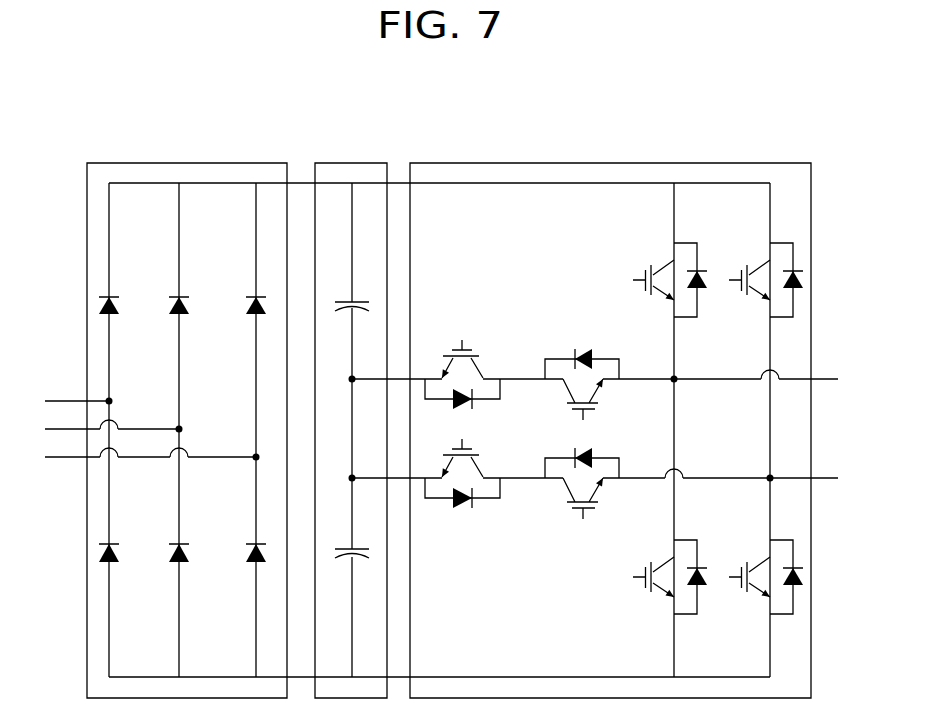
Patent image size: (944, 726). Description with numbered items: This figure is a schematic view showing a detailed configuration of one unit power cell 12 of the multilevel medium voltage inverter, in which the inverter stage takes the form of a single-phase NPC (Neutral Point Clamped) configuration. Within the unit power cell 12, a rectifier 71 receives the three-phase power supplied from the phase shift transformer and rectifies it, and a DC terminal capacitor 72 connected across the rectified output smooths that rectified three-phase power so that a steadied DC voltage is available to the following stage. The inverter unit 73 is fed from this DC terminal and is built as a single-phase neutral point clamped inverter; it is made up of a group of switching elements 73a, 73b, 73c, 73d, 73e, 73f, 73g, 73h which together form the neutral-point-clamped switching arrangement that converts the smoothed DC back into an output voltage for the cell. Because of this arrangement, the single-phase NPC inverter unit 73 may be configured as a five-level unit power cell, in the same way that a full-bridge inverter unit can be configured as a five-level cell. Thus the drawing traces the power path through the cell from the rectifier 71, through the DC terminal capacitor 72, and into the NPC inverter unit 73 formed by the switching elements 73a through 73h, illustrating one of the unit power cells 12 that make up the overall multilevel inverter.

The unit power cell 12 is at (714, 104).
The rectifier 71 is at (262, 162).
The DC terminal capacitor 72 is at (361, 162).
The inverter unit 73 is at (780, 162).
The switching element 73a is at (666, 259).
The switching element 73b is at (666, 556).
The switching element 73c is at (468, 348).
The switching element 73d is at (560, 358).
The switching element 73e is at (762, 259).
The switching element 73f is at (762, 556).
The switching element 73g is at (487, 499).
The switching element 73h is at (583, 520).